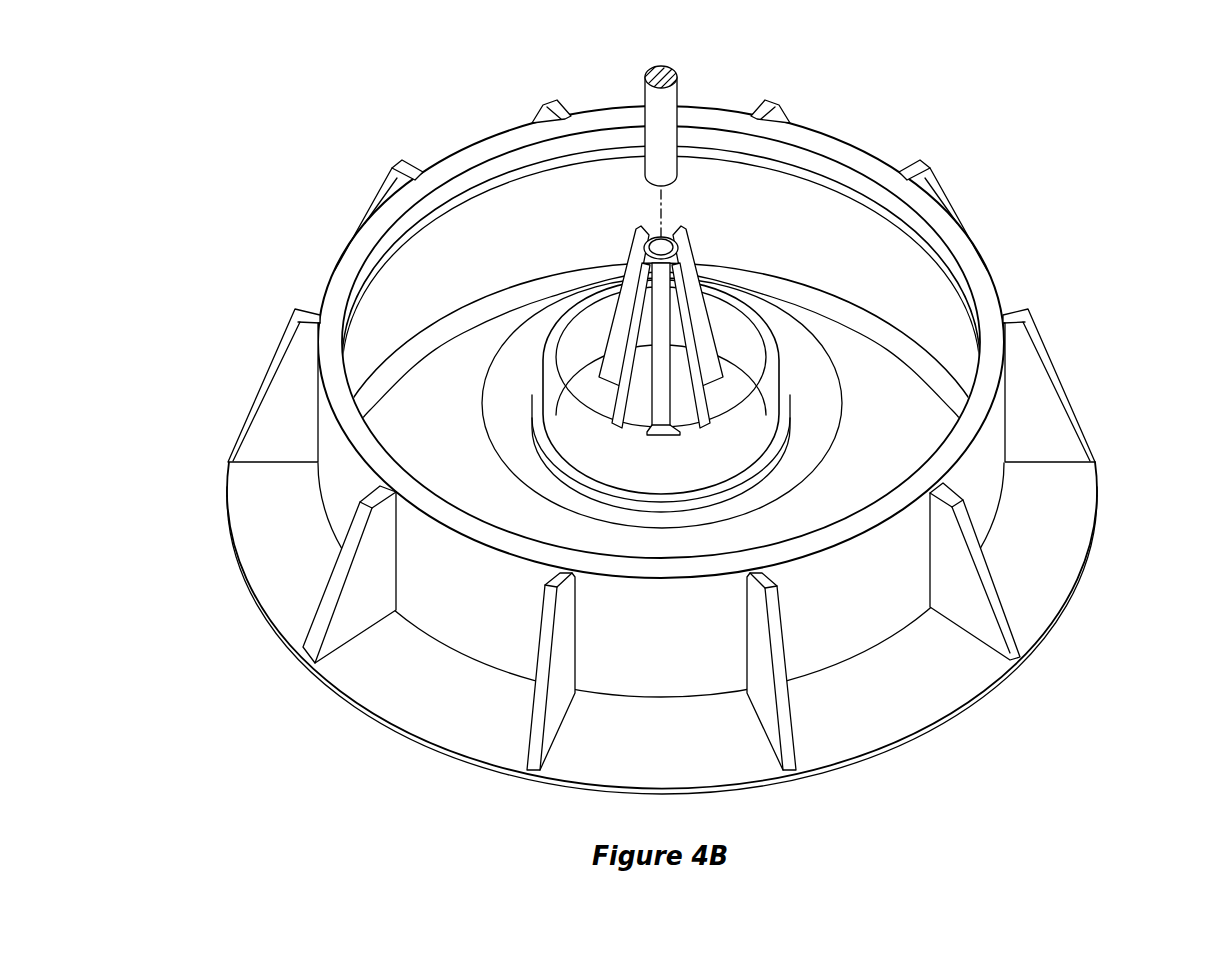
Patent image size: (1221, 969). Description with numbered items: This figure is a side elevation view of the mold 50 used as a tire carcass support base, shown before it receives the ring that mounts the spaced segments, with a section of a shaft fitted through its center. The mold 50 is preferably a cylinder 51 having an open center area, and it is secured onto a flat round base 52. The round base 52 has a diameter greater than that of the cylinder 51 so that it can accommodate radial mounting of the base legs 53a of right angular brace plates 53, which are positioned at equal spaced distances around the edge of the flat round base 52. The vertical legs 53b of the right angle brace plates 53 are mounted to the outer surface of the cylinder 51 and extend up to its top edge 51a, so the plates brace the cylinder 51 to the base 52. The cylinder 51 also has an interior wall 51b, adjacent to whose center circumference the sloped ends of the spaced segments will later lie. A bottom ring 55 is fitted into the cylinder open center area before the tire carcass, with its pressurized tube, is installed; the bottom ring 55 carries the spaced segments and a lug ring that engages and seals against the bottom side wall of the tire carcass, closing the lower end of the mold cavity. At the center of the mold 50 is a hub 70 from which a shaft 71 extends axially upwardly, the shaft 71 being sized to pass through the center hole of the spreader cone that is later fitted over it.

The mold 50 is at (655, 440).
The cylinder 51 is at (993, 303).
The top edge 51a is at (330, 274).
The interior wall 51b is at (403, 282).
The flat round base 52 is at (930, 708).
The right angular brace plates 53 is at (337, 572).
The base legs 53a is at (560, 730).
The vertical legs 53b is at (560, 673).
The bottom ring 55 is at (803, 312).
The hub 70 is at (777, 401).
The shaft 71 is at (672, 104).